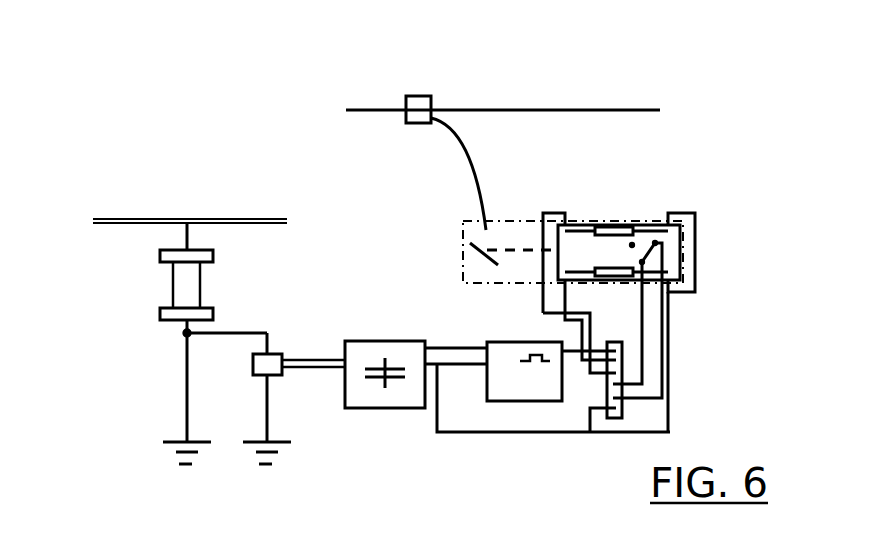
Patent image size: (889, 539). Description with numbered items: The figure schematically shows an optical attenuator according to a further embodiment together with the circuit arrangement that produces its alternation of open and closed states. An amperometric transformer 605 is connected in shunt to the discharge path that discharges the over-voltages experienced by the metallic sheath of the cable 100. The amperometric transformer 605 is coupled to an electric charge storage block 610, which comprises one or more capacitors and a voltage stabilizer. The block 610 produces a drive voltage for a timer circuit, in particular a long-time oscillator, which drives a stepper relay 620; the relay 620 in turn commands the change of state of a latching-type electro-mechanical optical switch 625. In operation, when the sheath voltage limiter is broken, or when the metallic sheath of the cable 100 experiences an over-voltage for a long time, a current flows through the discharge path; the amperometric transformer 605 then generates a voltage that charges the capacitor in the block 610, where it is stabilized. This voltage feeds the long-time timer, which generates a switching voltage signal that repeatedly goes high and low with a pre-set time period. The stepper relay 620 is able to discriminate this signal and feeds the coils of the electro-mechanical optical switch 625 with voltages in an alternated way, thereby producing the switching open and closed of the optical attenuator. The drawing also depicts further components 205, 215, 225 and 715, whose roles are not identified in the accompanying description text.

The cable 100 is at (145, 218).
The actuators (205a, 205b, ..., 205k) 205 is at (162, 318).
The line / conductor 215 is at (647, 108).
The sensors (225a, 225b, ..., 225k) 225 is at (420, 95).
The amperometric transformer 605 is at (283, 355).
The electric charge storage block 610 is at (385, 410).
The stepper relay 620 is at (623, 409).
The latching-type electro-mechanical optical switch 625 is at (593, 220).
The pulse generator 715 is at (525, 342).